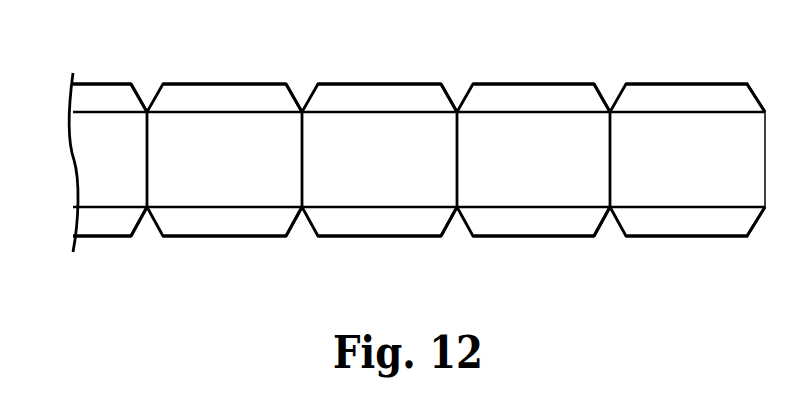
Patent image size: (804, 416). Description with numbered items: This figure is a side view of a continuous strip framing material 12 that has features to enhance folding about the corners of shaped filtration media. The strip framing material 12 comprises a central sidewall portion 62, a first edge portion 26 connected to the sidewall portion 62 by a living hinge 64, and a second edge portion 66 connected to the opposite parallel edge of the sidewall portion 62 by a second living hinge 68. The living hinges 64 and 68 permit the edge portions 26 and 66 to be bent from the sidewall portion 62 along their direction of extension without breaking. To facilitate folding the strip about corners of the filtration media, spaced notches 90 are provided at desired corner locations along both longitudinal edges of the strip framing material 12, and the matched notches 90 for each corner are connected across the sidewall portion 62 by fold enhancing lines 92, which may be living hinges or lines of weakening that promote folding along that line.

The continuous strip framing material 12 is at (442, 66).
The first edge portion 26 is at (204, 97).
The sidewall portion 62 is at (88, 164).
The living hinge 64 is at (221, 112).
The second edge portion 66 is at (235, 225).
The second living hinge 68 is at (200, 208).
The notches 90 is at (147, 88).
The fold enhancing lines 92 is at (148, 172).